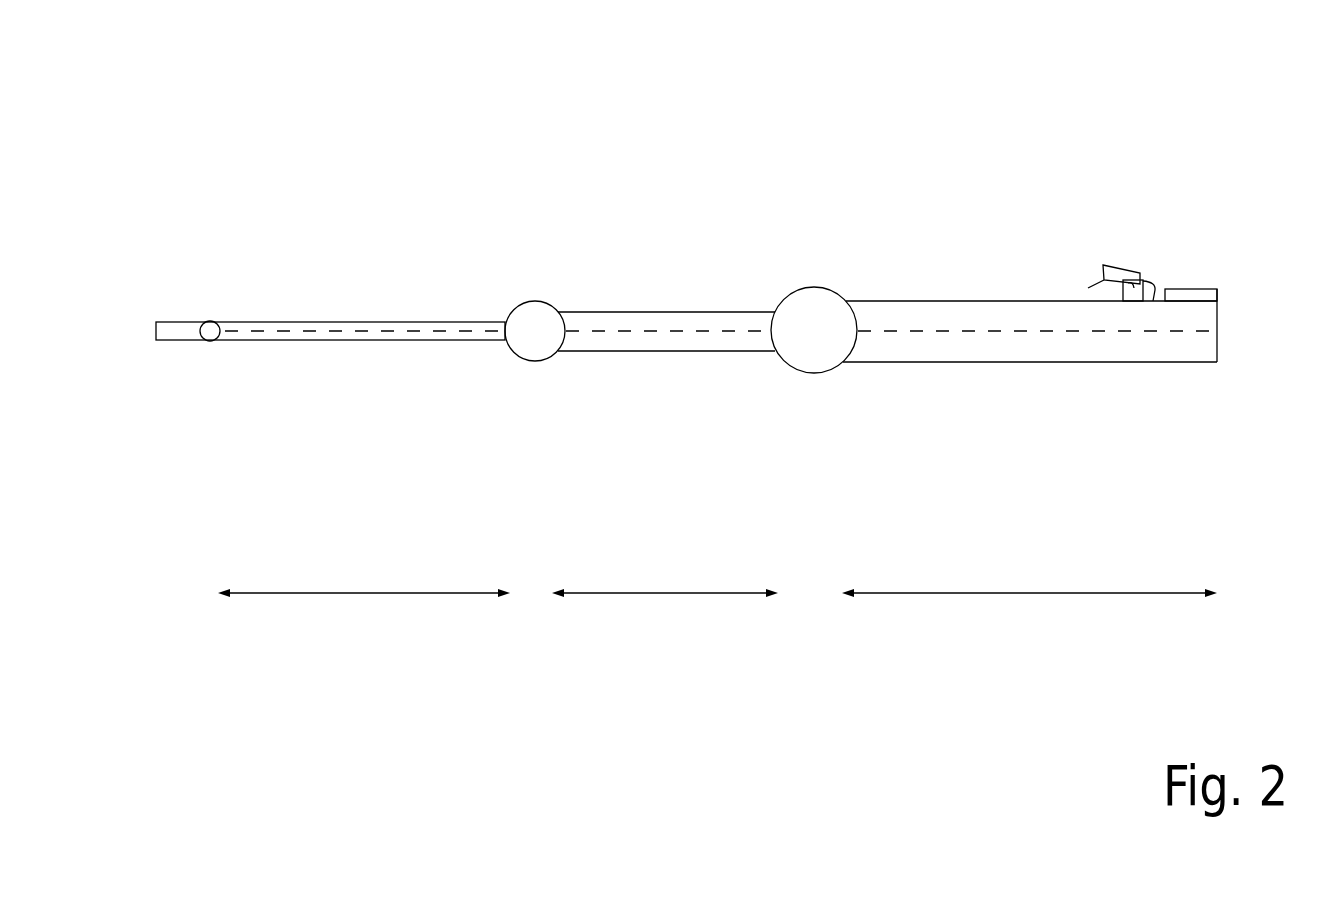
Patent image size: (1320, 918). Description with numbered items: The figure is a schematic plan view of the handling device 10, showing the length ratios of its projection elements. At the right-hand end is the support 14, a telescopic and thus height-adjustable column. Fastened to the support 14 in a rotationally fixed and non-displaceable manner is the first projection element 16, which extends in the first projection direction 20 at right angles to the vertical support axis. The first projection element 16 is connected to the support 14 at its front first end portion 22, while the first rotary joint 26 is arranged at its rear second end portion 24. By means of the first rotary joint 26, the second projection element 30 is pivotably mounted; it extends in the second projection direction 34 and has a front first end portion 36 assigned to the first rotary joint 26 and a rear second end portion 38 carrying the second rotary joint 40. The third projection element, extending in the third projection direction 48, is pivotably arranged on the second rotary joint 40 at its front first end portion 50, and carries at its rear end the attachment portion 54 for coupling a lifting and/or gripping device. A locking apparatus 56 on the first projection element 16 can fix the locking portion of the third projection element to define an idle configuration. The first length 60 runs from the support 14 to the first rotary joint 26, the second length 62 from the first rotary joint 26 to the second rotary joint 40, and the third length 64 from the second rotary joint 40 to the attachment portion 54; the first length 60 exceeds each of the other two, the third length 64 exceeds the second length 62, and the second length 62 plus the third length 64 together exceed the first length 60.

The handling device 10 is at (148, 140).
The support 14 is at (1210, 292).
The first projection element 16 is at (950, 320).
The first projection direction 20 is at (1032, 331).
The front first end portion 22 is at (1207, 345).
The rear second end portion 24 is at (875, 318).
The first rotary joint 26 is at (817, 320).
The second projection element 30 is at (643, 325).
The second projection direction 34 is at (295, 330).
The front first end portion 36 is at (763, 325).
The rear second end portion 38 is at (573, 325).
The second rotary joint 40 is at (537, 333).
The third projection direction 48 is at (393, 331).
The front first end portion 50 is at (502, 323).
The attachment portion 54 is at (180, 328).
The locking apparatus 56 is at (1172, 268).
The first length 60 is at (1033, 595).
The second length 62 is at (660, 595).
The third length 64 is at (373, 595).